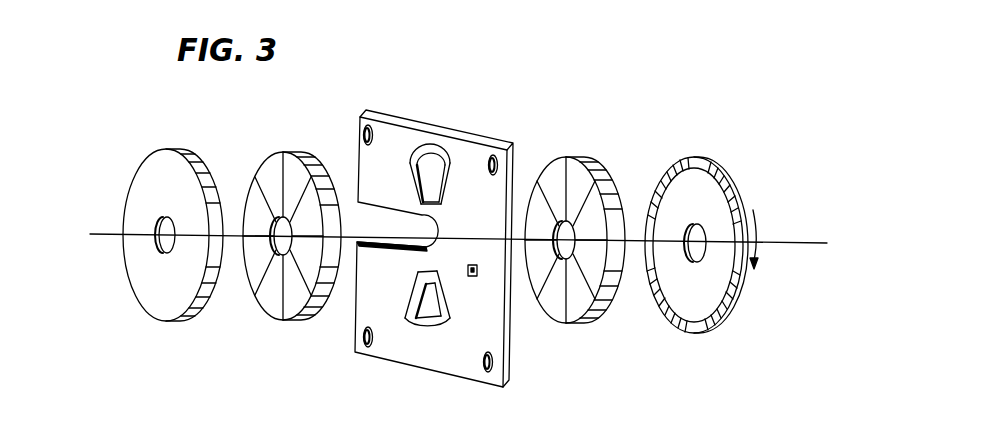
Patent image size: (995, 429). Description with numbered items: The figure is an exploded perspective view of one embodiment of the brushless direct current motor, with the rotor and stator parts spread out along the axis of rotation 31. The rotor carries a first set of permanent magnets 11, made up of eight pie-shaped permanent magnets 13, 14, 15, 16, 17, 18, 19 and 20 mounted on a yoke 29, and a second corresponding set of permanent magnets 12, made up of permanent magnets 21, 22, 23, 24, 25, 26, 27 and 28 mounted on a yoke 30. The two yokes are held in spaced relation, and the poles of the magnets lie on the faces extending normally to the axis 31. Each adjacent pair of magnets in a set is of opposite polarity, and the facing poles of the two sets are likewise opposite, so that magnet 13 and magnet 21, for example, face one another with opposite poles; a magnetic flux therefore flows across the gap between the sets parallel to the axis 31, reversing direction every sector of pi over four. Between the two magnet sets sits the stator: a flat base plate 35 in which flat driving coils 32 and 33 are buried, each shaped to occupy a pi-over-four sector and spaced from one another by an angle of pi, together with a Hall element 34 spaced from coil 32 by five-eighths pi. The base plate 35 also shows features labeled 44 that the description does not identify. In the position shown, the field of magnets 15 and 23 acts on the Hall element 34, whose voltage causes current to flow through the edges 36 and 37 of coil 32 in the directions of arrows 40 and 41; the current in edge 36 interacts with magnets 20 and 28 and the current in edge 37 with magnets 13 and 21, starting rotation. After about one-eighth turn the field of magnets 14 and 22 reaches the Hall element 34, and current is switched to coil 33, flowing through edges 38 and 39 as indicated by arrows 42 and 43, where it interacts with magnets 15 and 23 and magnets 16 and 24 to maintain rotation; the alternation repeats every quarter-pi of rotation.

The first set of permanent magnets 11 is at (283, 152).
The second set of permanent magnets 12 is at (568, 160).
The permanent magnet 13 is at (286, 190).
The permanent magnet 14 is at (299, 227).
The permanent magnet 15 is at (300, 263).
The permanent magnet 16 is at (287, 300).
The permanent magnet 17 is at (259, 298).
The permanent magnet 18 is at (247, 261).
The permanent magnet 19 is at (247, 227).
The permanent magnet 20 is at (259, 190).
The permanent magnet 21 is at (570, 194).
The permanent magnet 22 is at (583, 226).
The permanent magnet 23 is at (584, 261).
The permanent magnet 24 is at (570, 304).
The permanent magnet 25 is at (544, 301).
The permanent magnet 26 is at (531, 264).
The permanent magnet 27 is at (531, 228).
The permanent magnet 28 is at (546, 195).
The yoke 29 is at (162, 160).
The yoke 30 is at (690, 160).
The axis of rotation 31 is at (105, 234).
The driving coil 32 is at (429, 149).
The driving coil 33 is at (433, 308).
The Hall element 34 is at (477, 265).
The flat base plate 35 is at (387, 347).
The edge of driving coil 32 36 is at (411, 168).
The edge of driving coil 32 37 is at (446, 178).
The edge of driving coil 33 38 is at (441, 283).
The edge of driving coil 33 39 is at (415, 283).
The arrow 40 is at (418, 185).
The arrow 41 is at (447, 190).
The arrow 42 is at (443, 303).
The arrow 43 is at (410, 310).
The mounting holes 44 is at (358, 128).